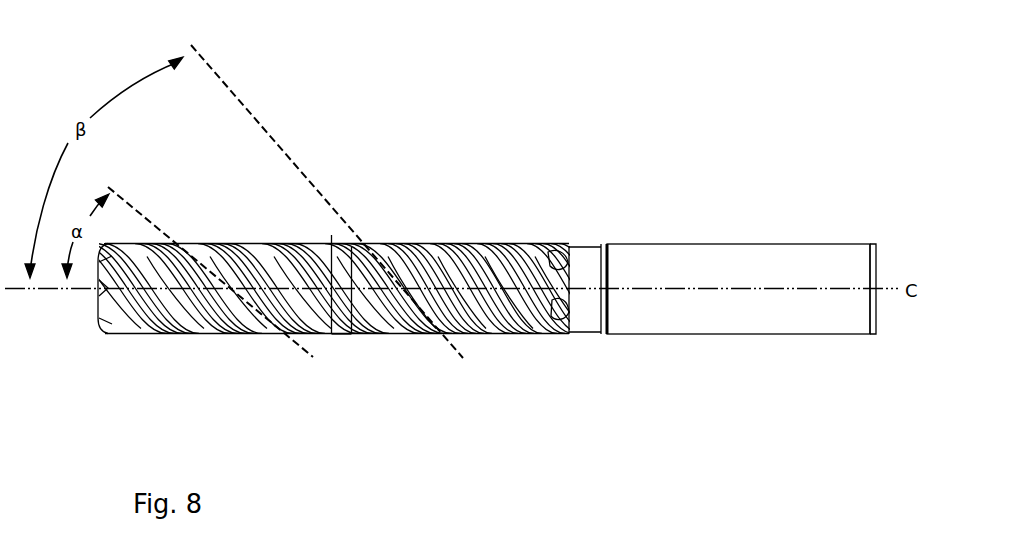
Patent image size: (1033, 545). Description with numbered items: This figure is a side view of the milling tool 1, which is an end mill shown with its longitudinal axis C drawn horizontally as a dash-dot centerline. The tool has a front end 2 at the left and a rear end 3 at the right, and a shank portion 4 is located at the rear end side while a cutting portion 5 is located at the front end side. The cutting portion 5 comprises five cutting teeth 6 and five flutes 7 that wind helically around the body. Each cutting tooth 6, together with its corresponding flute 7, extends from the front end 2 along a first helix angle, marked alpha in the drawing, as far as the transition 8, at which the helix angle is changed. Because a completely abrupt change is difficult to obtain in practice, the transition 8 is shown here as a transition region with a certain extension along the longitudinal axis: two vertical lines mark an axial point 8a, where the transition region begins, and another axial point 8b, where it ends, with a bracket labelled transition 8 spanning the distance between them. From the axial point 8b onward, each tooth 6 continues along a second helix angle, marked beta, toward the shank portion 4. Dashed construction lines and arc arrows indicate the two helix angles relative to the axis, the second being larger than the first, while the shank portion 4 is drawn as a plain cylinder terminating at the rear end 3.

The milling tool 1 is at (405, 142).
The front end 2 is at (81, 315).
The rear end 3 is at (887, 320).
The shank portion 4 is at (735, 332).
The cutting portion 5 is at (491, 337).
The cutting tooth 6 is at (168, 327).
The flute 7 is at (203, 323).
The transition 8 is at (332, 405).
The axial point 8a is at (332, 337).
The axial point 8b is at (353, 337).